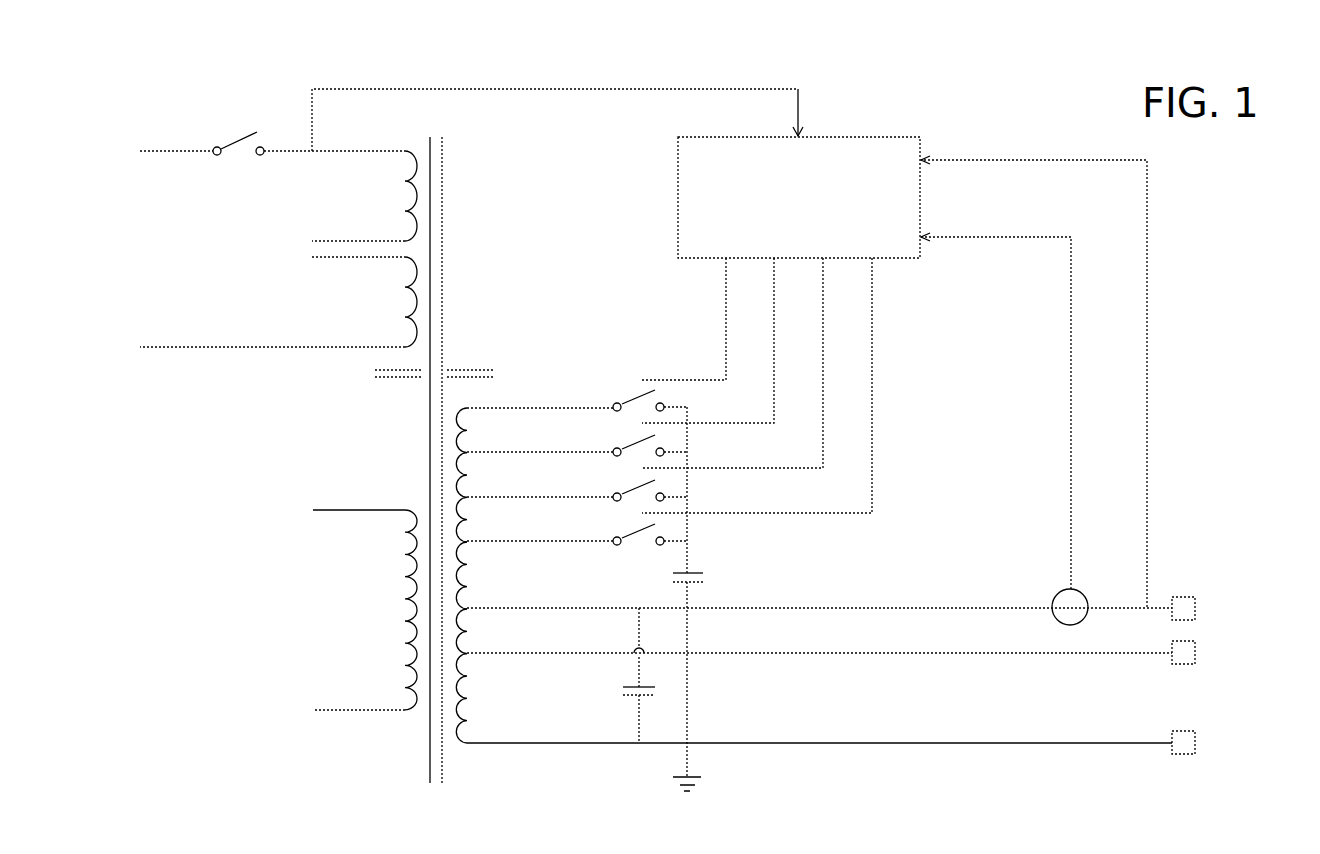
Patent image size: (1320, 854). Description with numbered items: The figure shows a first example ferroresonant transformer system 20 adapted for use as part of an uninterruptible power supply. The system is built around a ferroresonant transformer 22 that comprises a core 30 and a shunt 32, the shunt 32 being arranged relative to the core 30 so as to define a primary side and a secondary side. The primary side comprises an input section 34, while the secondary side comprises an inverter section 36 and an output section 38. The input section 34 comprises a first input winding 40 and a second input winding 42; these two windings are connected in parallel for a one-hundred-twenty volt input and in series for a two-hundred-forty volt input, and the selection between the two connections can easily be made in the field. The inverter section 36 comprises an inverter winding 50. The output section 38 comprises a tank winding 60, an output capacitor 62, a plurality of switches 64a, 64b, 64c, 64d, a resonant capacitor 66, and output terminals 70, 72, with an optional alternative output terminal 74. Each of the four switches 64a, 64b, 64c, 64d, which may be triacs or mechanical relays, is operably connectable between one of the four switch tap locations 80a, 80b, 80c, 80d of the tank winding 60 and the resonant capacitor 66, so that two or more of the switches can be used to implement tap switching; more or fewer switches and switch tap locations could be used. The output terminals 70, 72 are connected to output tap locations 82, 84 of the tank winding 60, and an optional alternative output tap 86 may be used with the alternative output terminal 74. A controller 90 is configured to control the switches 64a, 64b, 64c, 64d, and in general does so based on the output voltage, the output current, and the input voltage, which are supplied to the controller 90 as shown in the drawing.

The ferroresonant transformer system 20 is at (278, 725).
The ferroresonant transformer 22 is at (412, 733).
The core 30 is at (443, 218).
The shunt 32 is at (473, 370).
The input section 34 is at (348, 362).
The inverter section 36 is at (343, 490).
The output section 38 is at (590, 762).
The first input winding 40 is at (410, 205).
The second input winding 42 is at (410, 310).
The inverter winding 50 is at (405, 599).
The tank winding 60 is at (465, 586).
The output capacitor 62 is at (632, 695).
The switch 64a is at (632, 397).
The switch 64b is at (632, 442).
The switch 64c is at (632, 487).
The switch 64d is at (632, 531).
The resonant capacitor 66 is at (697, 573).
The output terminal 70 is at (1187, 610).
The output terminal 72 is at (1187, 745).
The alternative output terminal 74 is at (1187, 655).
The switch tap location 80a is at (467, 408).
The switch tap location 80b is at (463, 450).
The switch tap location 80c is at (463, 494).
The switch tap location 80d is at (463, 538).
The output tap location 82 is at (465, 614).
The output tap location 84 is at (465, 746).
The alternative output tap 86 is at (465, 659).
The controller 90 is at (684, 177).